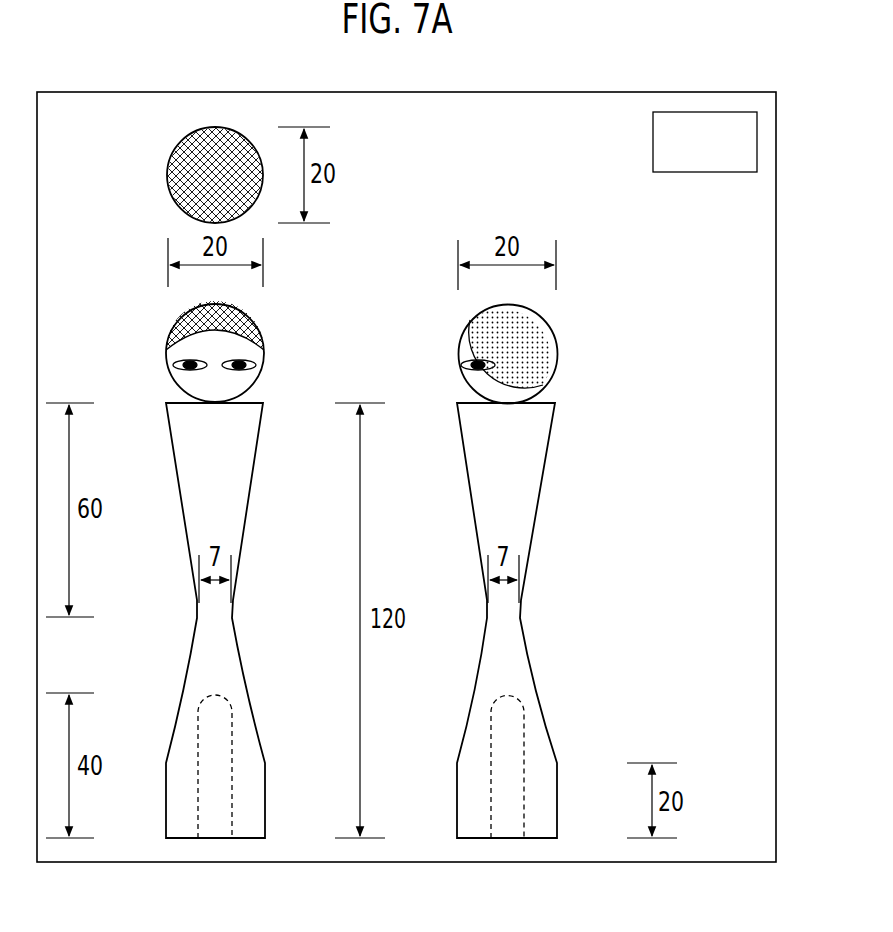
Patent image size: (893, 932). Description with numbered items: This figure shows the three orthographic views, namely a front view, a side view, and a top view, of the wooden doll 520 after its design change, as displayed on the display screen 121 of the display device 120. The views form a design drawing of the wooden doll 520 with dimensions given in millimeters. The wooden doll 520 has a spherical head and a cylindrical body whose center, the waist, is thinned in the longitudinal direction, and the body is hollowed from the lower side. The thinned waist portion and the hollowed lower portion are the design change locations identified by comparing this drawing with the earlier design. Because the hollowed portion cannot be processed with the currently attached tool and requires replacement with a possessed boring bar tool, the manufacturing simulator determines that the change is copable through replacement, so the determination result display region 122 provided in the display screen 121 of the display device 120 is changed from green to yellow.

The wooden doll 520 is at (360, 482).
The determination result display region 122 is at (708, 172).
The display screen 121 is at (622, 862).
The display device 120 is at (406, 506).